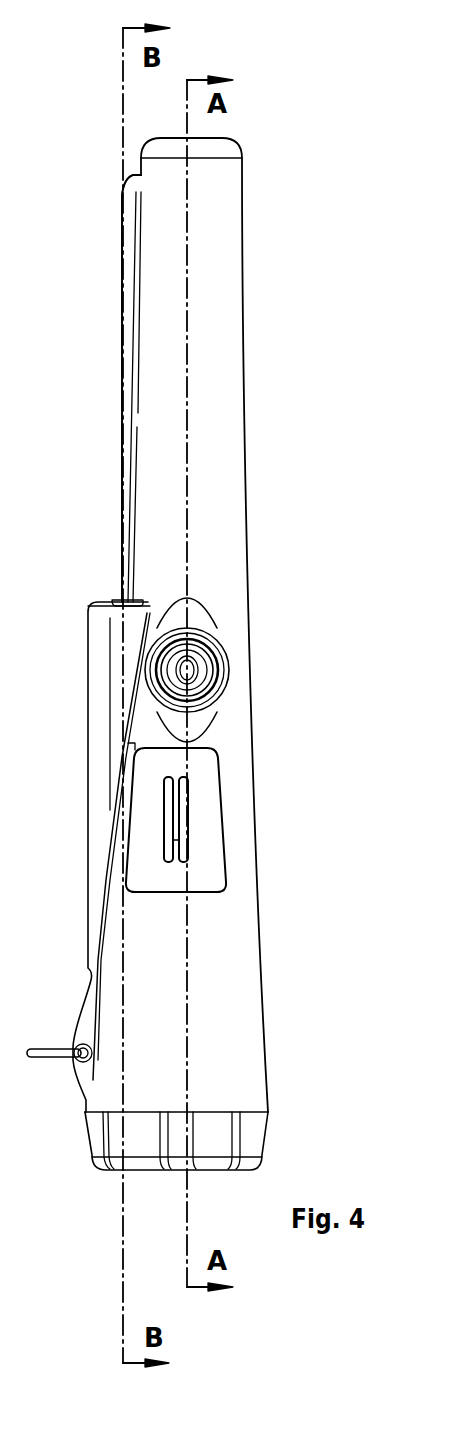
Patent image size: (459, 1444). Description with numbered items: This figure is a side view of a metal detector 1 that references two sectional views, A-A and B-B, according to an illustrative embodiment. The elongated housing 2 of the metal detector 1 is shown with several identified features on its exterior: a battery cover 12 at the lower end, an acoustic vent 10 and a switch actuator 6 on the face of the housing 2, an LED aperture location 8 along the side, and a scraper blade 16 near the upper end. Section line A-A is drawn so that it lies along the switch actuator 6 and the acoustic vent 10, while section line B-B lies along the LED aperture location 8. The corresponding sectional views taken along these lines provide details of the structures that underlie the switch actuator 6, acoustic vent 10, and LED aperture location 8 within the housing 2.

The metal detector 1 is at (78, 462).
The housing 2 is at (248, 527).
The switch actuator 6 is at (207, 676).
The LED aperture location 8 is at (122, 602).
The acoustic vent 10 is at (162, 845).
The battery cover 12 is at (85, 1137).
The scraper blade 16 is at (132, 178).